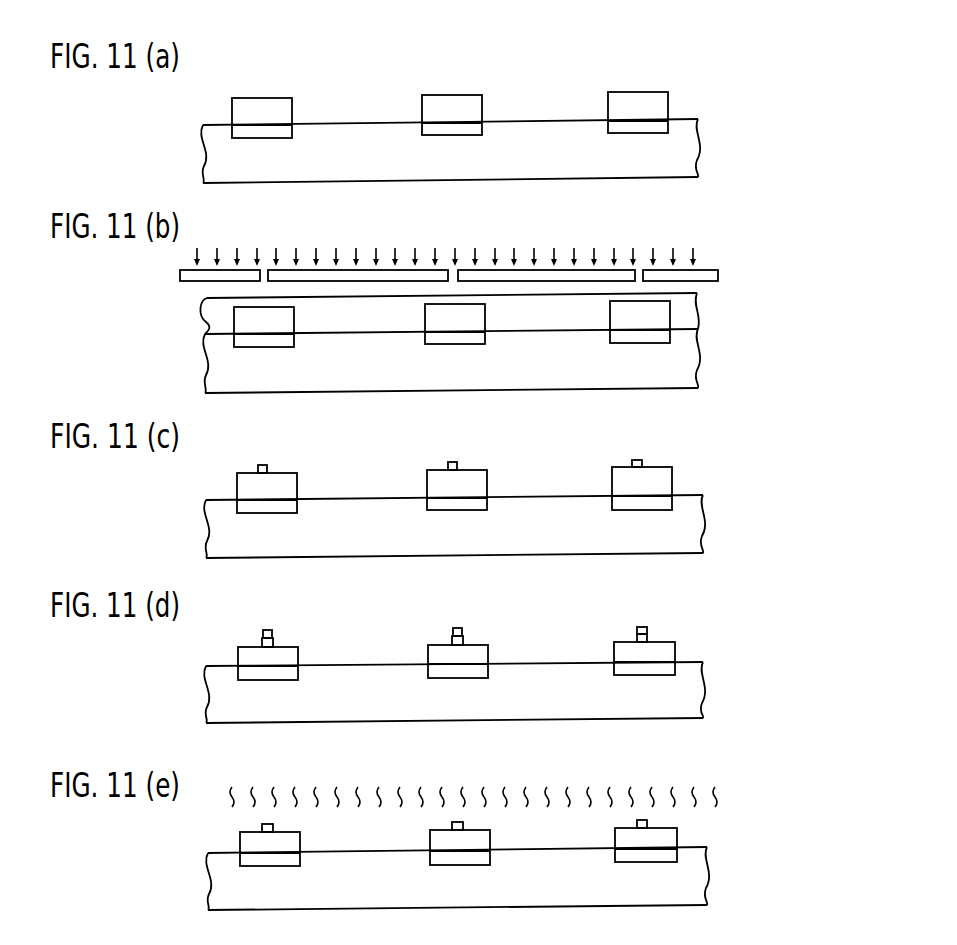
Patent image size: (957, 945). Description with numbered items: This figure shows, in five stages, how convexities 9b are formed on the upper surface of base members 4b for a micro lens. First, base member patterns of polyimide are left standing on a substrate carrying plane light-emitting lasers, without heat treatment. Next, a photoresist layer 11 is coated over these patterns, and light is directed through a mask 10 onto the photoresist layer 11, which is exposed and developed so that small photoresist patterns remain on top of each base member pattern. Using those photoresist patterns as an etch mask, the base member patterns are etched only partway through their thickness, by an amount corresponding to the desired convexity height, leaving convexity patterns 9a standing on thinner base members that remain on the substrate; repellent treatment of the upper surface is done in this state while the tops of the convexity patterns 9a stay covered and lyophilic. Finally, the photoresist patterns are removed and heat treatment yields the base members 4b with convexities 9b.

The base member 4b is at (240, 846).
The convexity pattern 9a is at (273, 642).
The convexity 9b is at (273, 826).
The mask 10 is at (720, 276).
The photoresist layer 11 is at (700, 310).